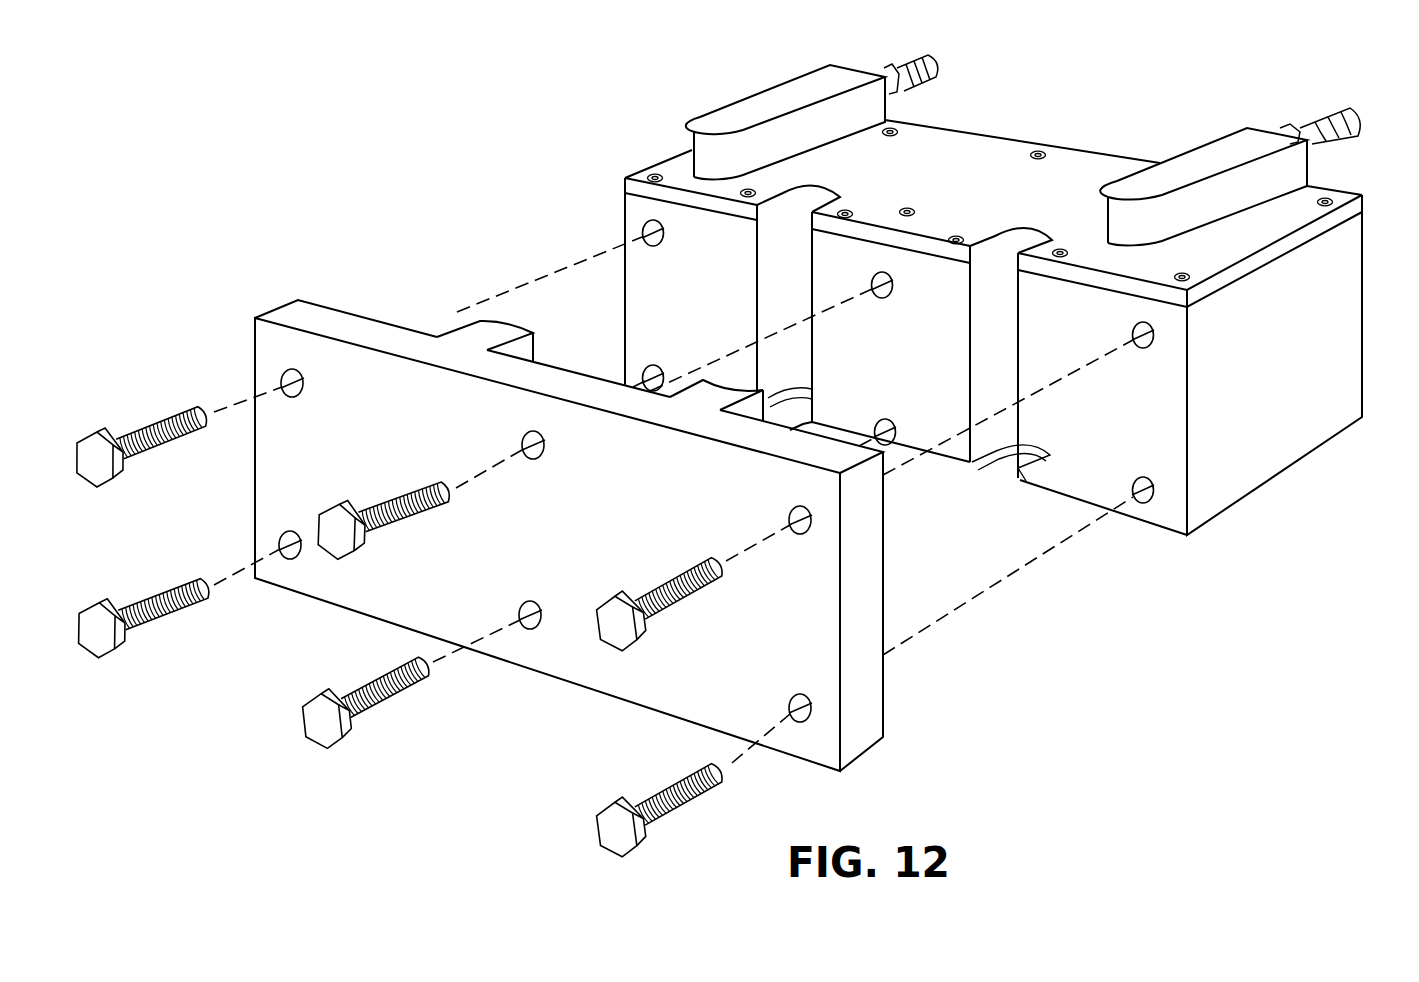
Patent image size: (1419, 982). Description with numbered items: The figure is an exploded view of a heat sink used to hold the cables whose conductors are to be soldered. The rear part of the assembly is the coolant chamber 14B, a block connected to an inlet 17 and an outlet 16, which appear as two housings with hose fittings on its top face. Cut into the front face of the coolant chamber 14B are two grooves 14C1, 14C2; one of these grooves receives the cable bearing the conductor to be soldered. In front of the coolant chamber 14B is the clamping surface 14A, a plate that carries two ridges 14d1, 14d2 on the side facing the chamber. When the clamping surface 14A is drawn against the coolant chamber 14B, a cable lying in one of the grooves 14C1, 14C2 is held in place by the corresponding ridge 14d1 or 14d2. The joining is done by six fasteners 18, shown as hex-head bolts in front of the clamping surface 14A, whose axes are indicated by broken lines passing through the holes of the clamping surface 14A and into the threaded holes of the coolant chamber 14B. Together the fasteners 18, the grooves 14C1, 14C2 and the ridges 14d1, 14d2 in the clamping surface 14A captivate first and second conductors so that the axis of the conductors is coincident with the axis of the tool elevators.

The clamping surface 14A is at (878, 748).
The coolant chamber 14B is at (1190, 534).
The groove 14C1 is at (807, 212).
The groove 14C2 is at (999, 262).
The ridge 14d1 is at (468, 337).
The ridge 14d2 is at (700, 392).
The outlet 16 is at (795, 86).
The inlet 17 is at (1237, 143).
The fasteners 18 is at (648, 838).